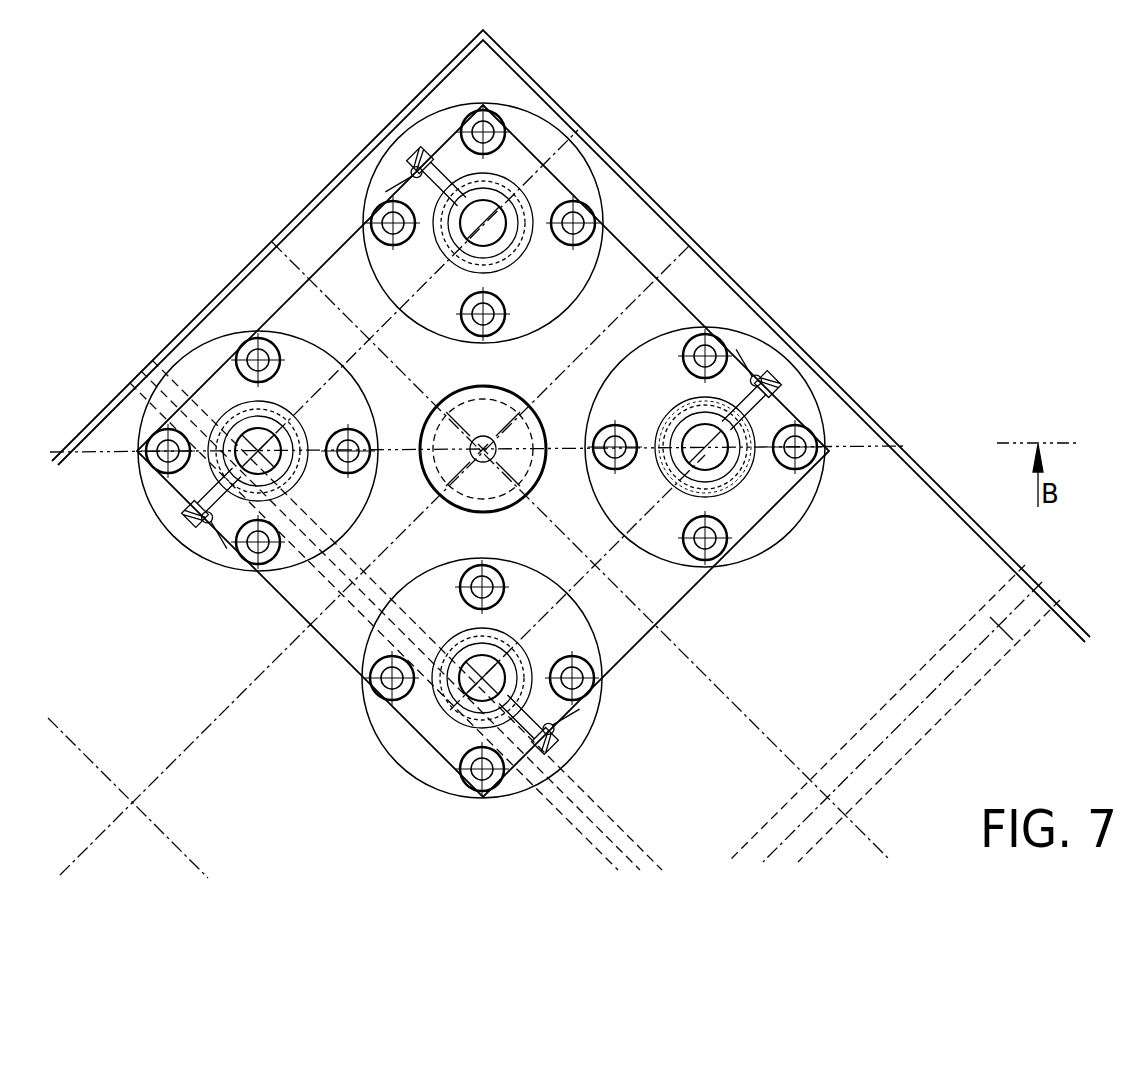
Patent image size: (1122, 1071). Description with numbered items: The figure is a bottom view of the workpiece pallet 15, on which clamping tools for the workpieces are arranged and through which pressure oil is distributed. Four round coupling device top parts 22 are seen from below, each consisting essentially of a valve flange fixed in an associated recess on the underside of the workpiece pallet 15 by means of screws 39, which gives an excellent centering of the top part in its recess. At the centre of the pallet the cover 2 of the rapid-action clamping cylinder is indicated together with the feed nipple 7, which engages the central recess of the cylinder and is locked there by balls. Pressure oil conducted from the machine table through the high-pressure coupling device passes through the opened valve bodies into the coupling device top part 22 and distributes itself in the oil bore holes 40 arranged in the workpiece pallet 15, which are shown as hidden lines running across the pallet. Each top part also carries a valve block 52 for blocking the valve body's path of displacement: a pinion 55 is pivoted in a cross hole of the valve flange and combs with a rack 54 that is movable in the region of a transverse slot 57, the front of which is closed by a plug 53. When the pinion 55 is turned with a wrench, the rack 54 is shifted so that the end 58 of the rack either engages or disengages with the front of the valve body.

The cover 2 is at (612, 263).
The feed nipple 7 is at (497, 417).
The workpiece pallet 15 is at (650, 242).
The coupling device top part 22 is at (552, 138).
The screws 39 is at (489, 122).
The oil bore holes 40 is at (303, 270).
The valve block 52 is at (800, 386).
The plug 53 is at (782, 368).
The rack 54 is at (762, 403).
The pinion 55 is at (760, 374).
The transverse slot 57 is at (470, 222).
The end of the rack 58 is at (792, 402).